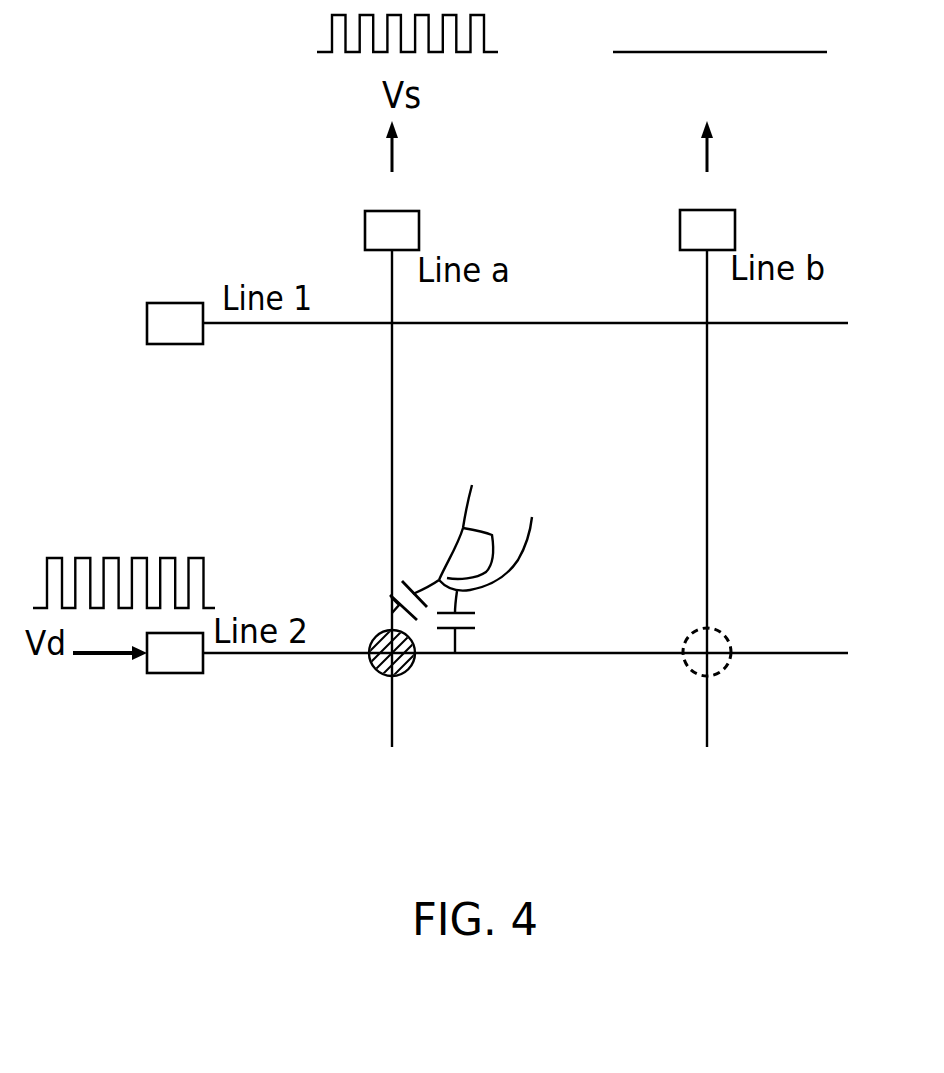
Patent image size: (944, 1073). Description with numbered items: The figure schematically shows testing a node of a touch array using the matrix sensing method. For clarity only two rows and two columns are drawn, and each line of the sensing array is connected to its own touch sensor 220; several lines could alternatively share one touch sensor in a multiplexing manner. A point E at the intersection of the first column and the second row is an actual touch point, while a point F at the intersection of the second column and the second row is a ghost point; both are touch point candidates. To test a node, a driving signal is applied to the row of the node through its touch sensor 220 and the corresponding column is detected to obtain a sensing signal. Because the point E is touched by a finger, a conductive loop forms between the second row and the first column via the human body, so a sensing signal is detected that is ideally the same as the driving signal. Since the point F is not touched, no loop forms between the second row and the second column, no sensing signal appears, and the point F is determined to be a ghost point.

The touch sensor 220 is at (419, 222).
The point E is at (408, 668).
The point F is at (718, 672).